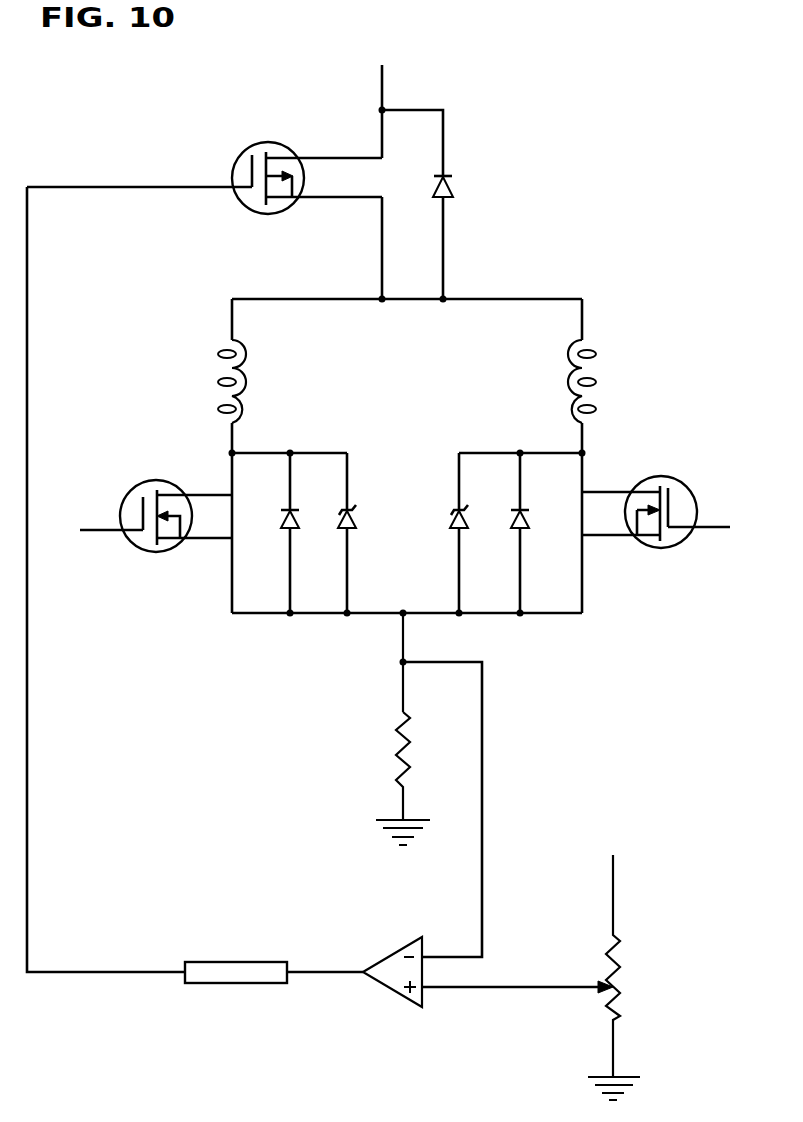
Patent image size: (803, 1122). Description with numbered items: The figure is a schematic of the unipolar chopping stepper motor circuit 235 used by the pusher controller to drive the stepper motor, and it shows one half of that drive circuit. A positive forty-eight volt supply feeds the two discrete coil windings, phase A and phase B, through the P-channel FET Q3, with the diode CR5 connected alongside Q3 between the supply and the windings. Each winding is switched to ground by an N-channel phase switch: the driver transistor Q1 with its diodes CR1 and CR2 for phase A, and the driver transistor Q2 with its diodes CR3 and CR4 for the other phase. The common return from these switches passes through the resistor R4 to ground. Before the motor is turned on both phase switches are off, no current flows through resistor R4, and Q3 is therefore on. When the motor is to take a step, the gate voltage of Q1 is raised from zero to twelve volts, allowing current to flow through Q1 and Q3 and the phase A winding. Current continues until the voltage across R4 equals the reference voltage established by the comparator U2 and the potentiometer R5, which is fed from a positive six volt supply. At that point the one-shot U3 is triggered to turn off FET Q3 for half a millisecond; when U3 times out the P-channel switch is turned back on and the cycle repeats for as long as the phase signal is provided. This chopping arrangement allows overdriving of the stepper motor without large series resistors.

The unipolar chopping stepper motor circuit 235 is at (563, 246).
The driver transistor Q1 is at (156, 510).
The driver transistor Q2 is at (656, 506).
The P-channel FET Q3 is at (291, 171).
The diode CR1 is at (276, 533).
The diode CR2 is at (333, 533).
The diode CR3 is at (474, 533).
The diode CR4 is at (535, 533).
The diode CR5 is at (471, 186).
The resistor R4 is at (394, 729).
The reference resistor R5 is at (621, 977).
The comparator U2 is at (392, 962).
The one-shot U3 is at (236, 972).